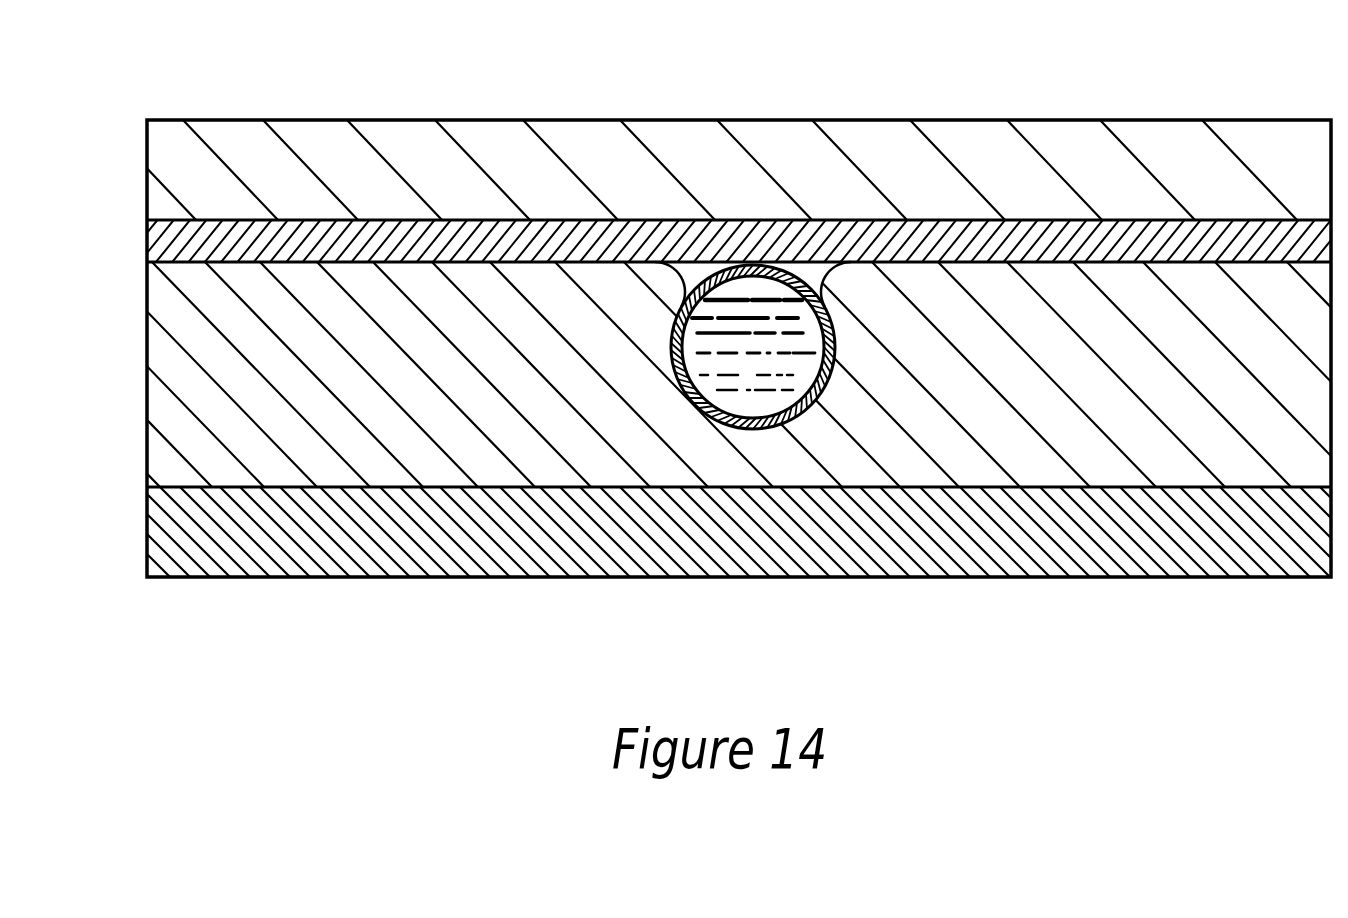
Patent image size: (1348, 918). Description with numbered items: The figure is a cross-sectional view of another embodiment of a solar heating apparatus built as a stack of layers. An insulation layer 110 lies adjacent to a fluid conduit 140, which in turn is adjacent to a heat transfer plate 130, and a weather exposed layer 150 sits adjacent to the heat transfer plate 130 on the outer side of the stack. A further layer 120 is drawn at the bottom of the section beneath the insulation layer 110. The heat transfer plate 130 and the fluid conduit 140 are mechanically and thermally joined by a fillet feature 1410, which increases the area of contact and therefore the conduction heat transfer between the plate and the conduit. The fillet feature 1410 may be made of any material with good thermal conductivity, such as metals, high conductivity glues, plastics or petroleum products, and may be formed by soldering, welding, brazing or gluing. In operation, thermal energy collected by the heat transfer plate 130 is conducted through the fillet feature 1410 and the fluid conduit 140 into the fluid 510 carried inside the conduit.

The insulation layer 110 is at (180, 352).
The bottom layer 120 is at (173, 537).
The heat transfer plate 130 is at (147, 237).
The weather exposed layer 150 is at (187, 158).
The fluid conduit 140 is at (777, 425).
The fluid 510 is at (737, 290).
The fillet feature 1410 is at (815, 275).